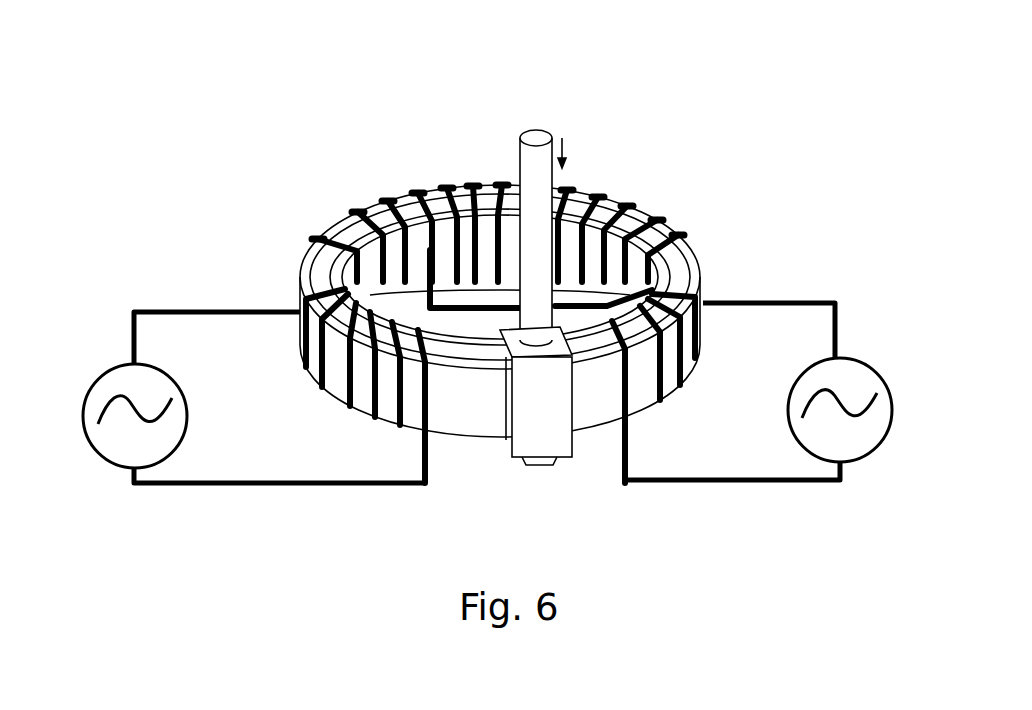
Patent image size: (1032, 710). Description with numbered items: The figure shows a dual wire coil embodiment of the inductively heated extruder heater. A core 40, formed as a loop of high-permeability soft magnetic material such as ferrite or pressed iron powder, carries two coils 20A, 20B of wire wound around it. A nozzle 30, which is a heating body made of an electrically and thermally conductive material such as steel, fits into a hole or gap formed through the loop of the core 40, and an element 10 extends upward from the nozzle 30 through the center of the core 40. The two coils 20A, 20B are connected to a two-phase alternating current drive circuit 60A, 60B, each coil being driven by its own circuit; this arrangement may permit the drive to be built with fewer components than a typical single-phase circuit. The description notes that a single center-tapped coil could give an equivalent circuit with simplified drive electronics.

The rod / conductor 10 is at (522, 133).
The coil 20A is at (316, 288).
The coil 20B is at (627, 207).
The nozzle 30 is at (537, 430).
The core 40 is at (340, 220).
The alternating current drive circuit 60A is at (97, 362).
The alternating current drive circuit 60B is at (858, 352).